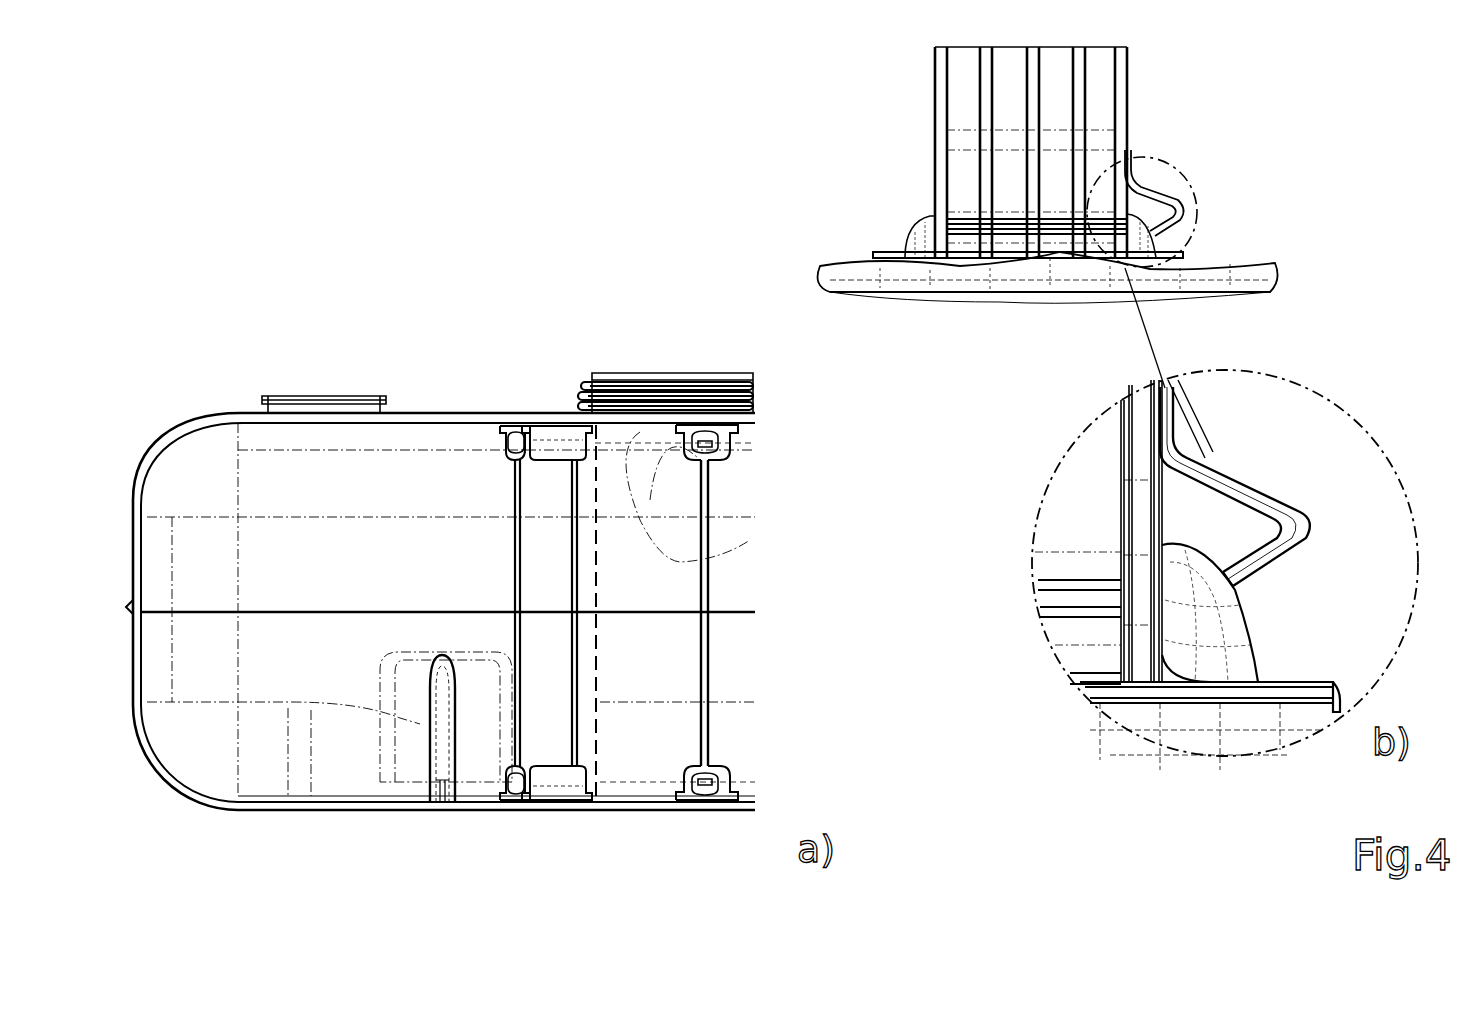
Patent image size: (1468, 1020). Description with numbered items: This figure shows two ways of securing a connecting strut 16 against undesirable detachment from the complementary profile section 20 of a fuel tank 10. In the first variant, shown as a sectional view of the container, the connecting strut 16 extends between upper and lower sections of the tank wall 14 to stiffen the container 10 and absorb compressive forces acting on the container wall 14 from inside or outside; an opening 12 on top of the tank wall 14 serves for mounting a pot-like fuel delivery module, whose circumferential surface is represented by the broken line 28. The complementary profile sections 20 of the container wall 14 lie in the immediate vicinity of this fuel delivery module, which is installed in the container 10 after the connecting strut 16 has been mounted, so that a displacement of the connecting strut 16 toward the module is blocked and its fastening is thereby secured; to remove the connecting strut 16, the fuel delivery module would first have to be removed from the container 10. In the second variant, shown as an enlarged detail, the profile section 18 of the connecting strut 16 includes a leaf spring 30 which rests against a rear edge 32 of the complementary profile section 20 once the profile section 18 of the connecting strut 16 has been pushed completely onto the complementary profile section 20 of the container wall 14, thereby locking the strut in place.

The fuel tank 10 is at (185, 396).
The opening 12 is at (666, 386).
The tank wall 14 is at (137, 694).
The connecting strut 16 is at (540, 553).
The profile section 18 is at (548, 444).
The complementary profile section 20 is at (1212, 626).
The broken line 28 is at (603, 662).
The leaf spring 30 is at (1295, 523).
The rear edge 32 is at (1228, 590).